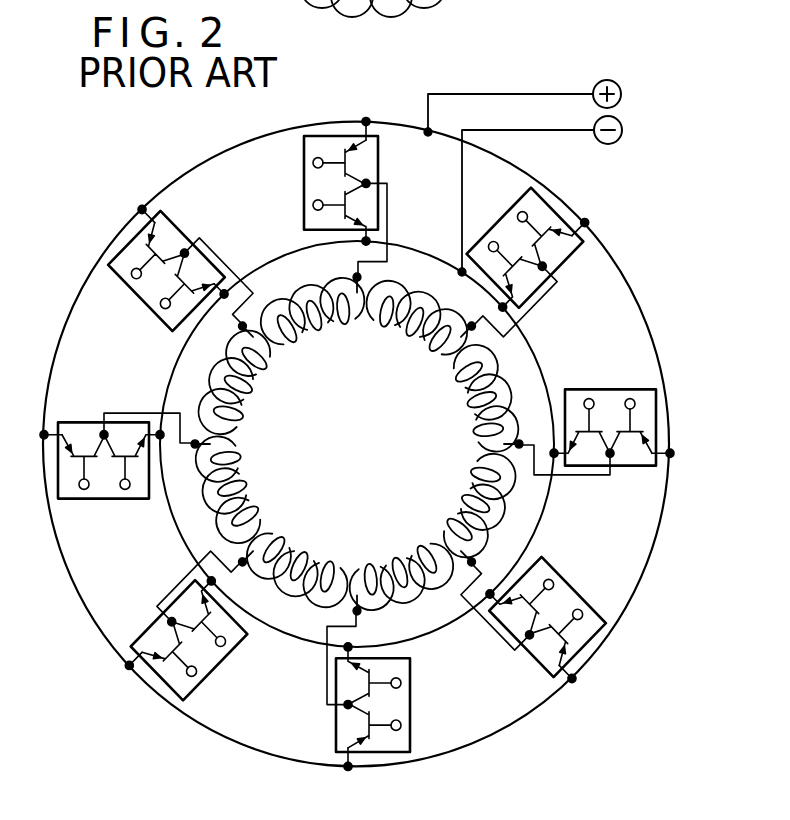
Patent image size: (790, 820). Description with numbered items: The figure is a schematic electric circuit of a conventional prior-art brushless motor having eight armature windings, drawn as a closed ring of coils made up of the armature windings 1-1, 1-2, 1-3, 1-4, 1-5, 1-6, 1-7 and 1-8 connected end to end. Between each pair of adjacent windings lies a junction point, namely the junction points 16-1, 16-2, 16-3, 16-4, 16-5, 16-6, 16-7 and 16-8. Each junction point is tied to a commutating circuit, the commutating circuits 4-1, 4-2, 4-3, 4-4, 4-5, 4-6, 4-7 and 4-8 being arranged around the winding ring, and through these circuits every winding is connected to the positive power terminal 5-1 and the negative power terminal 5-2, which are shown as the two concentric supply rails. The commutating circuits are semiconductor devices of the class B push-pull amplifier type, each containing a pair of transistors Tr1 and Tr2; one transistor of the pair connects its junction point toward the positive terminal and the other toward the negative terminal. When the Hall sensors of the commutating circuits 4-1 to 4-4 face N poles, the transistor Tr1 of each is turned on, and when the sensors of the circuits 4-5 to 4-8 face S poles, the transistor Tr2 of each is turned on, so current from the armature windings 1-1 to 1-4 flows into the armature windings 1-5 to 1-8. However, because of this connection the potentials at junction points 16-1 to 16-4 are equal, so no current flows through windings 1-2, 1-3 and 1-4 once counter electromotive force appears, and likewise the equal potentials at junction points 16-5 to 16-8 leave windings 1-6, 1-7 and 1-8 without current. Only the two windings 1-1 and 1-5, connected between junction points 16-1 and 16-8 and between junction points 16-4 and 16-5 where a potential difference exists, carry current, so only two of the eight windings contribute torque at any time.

The armature winding 1-1 is at (218, 362).
The armature winding 1-2 is at (310, 285).
The armature winding 1-3 is at (403, 283).
The armature winding 1-4 is at (497, 372).
The armature winding 1-5 is at (513, 490).
The armature winding 1-6 is at (397, 608).
The armature winding 1-7 is at (300, 615).
The armature winding 1-8 is at (208, 540).
The commutating circuit 4-1 is at (171, 271).
The commutating circuit 4-2 is at (302, 166).
The commutating circuit 4-3 is at (560, 212).
The commutating circuit 4-4 is at (623, 390).
The commutating circuit 4-5 is at (573, 588).
The commutating circuit 4-6 is at (410, 707).
The commutating circuit 4-7 is at (203, 693).
The commutating circuit 4-8 is at (120, 494).
The positive power terminal 5-1 is at (622, 88).
The negative power terminal 5-2 is at (622, 130).
The junction point 16-1 is at (248, 325).
The junction point 16-2 is at (362, 292).
The junction point 16-3 is at (462, 333).
The junction point 16-4 is at (517, 449).
The junction point 16-5 is at (468, 565).
The junction point 16-6 is at (354, 608).
The junction point 16-7 is at (245, 563).
The junction point 16-8 is at (198, 438).
The transistor Tr1 is at (167, 233).
The transistor Tr2 is at (197, 277).